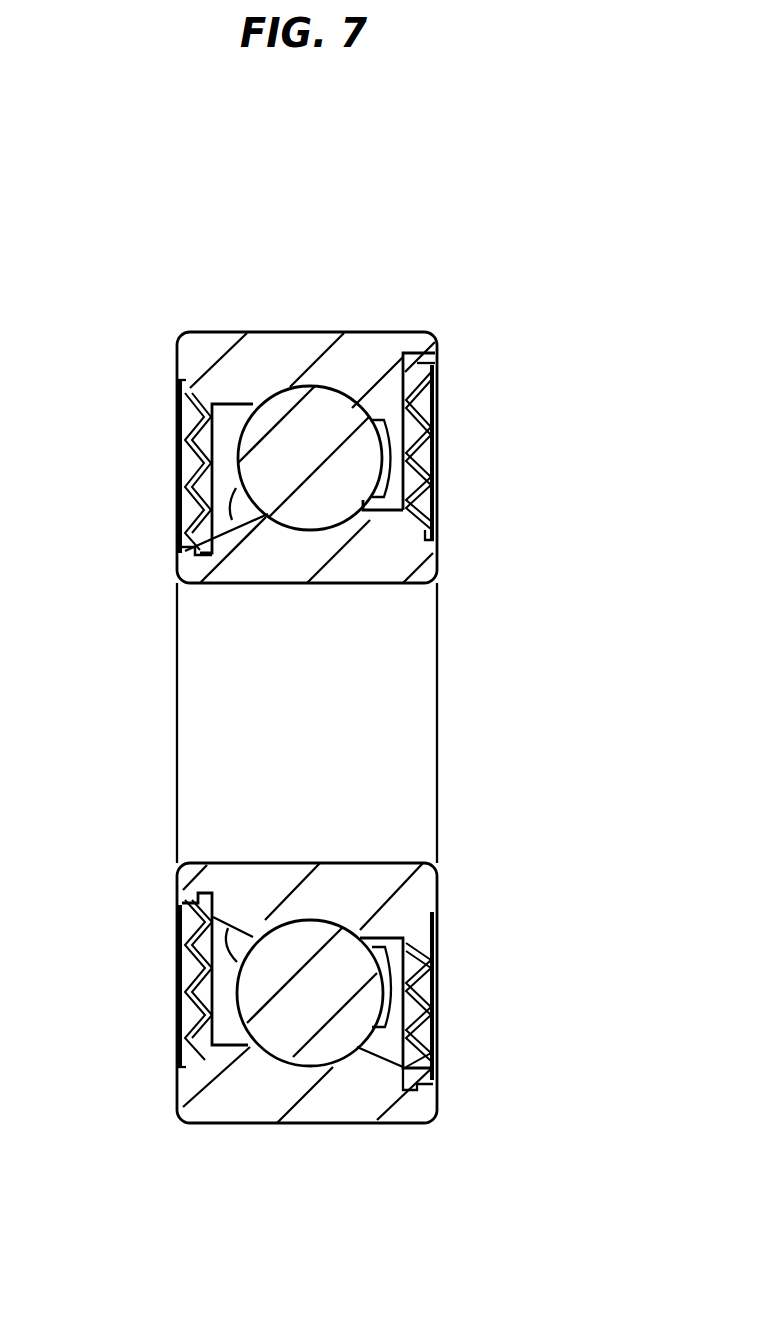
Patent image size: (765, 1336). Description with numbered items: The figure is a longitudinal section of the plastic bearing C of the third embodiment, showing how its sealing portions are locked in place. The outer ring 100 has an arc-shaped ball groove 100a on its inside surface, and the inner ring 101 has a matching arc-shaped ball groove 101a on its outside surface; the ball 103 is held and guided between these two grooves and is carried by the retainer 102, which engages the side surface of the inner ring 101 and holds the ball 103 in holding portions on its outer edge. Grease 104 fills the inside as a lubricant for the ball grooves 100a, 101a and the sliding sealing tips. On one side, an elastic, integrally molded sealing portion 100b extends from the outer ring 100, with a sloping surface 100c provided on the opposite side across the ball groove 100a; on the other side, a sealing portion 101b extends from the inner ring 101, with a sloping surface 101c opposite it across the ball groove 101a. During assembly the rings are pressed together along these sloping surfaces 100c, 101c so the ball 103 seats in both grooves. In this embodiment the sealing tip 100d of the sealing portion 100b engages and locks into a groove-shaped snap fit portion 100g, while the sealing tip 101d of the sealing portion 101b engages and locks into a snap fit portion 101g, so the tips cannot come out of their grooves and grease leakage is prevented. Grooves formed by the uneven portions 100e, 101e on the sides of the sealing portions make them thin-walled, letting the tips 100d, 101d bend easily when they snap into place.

The outer ring 100 is at (400, 332).
The ball groove 100a is at (305, 1066).
The sealing portion 100b is at (200, 452).
The sloping surface 100c is at (365, 395).
The sealing tip 100d is at (203, 528).
The uneven portion 100e is at (180, 482).
The snap fit portion 100g is at (437, 352).
The inner ring 101 is at (390, 583).
The ball groove 101a is at (307, 922).
The sealing portion 101b is at (437, 443).
The sloping surface 101c is at (232, 492).
The sealing tip 101d is at (433, 375).
The uneven portion 101e is at (437, 408).
The snap fit portion 101g is at (180, 563).
The retainer 102 is at (395, 498).
The ball 103 is at (276, 408).
The grease 104 is at (213, 404).
The bearing C is at (343, 298).